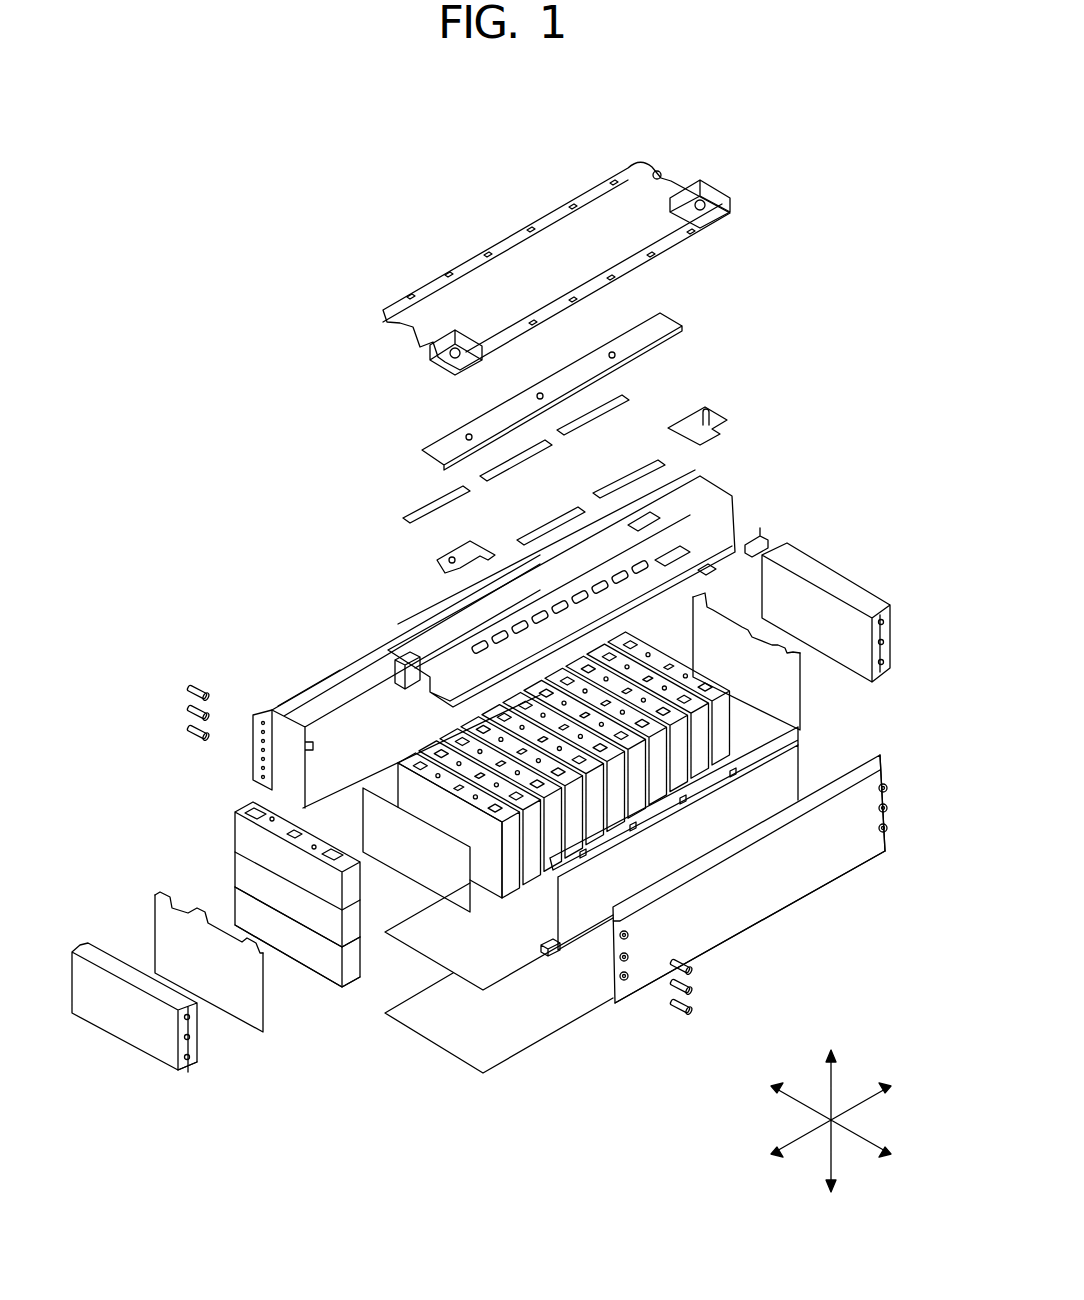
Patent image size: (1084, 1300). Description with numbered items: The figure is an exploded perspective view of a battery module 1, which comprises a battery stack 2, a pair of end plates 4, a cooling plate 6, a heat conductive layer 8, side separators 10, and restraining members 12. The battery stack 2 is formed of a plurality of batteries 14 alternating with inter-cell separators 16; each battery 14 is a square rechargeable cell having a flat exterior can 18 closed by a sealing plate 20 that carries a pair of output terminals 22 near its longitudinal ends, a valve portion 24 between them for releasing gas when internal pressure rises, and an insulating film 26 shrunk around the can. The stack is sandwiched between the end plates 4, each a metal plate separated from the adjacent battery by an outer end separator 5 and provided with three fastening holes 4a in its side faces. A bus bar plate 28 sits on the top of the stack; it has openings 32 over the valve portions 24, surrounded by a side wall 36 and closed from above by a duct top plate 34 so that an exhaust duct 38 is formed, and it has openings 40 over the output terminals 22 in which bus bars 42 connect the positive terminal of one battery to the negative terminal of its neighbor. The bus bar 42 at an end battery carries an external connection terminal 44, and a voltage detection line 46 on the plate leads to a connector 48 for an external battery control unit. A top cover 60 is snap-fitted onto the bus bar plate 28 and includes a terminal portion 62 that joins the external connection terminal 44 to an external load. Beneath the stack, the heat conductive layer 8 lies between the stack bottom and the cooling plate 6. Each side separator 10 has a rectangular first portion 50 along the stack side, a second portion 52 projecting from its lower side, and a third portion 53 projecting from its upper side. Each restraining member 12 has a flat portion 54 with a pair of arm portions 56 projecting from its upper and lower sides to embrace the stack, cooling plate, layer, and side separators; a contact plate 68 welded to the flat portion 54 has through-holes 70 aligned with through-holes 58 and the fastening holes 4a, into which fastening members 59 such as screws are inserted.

The battery module 1 is at (504, 1188).
The battery stack 2 is at (740, 712).
The end plate 4 is at (481, 833).
The fastening hole 4a is at (187, 1064).
The outer end separator 5 is at (802, 684).
The cooling plate 6 is at (513, 1060).
The heat conductive layer 8 is at (420, 960).
The side separator 10 is at (497, 819).
The restraining member 12 is at (297, 689).
The battery 14 is at (252, 877).
The inter-cell separator 16 is at (415, 872).
The exterior can 18 is at (233, 822).
The sealing plate 20 is at (248, 803).
The output terminal 22 is at (223, 888).
The valve portion 24 is at (302, 822).
The insulating film 26 is at (228, 835).
The bus bar plate 28 is at (762, 538).
The opening 32 is at (566, 582).
The duct top plate 34 is at (672, 328).
The side wall 36 is at (640, 528).
The exhaust duct 38 is at (668, 556).
The opening 40 is at (708, 574).
The bus bar 42 is at (413, 500).
The external connection terminal 44 is at (712, 424).
The voltage detection line 46 is at (440, 590).
The connector 48 is at (403, 652).
The first portion 50 is at (580, 915).
The second portion 52 is at (548, 958).
The third portion 53 is at (805, 730).
The flat portion 54 is at (884, 862).
The arm portion 56 is at (888, 772).
The through-hole 58 is at (888, 830).
The fastening member 59 is at (682, 1012).
The top cover 60 is at (641, 170).
The terminal portion 62 is at (705, 198).
The contact plate 68 is at (295, 698).
The through-hole 70 is at (232, 695).